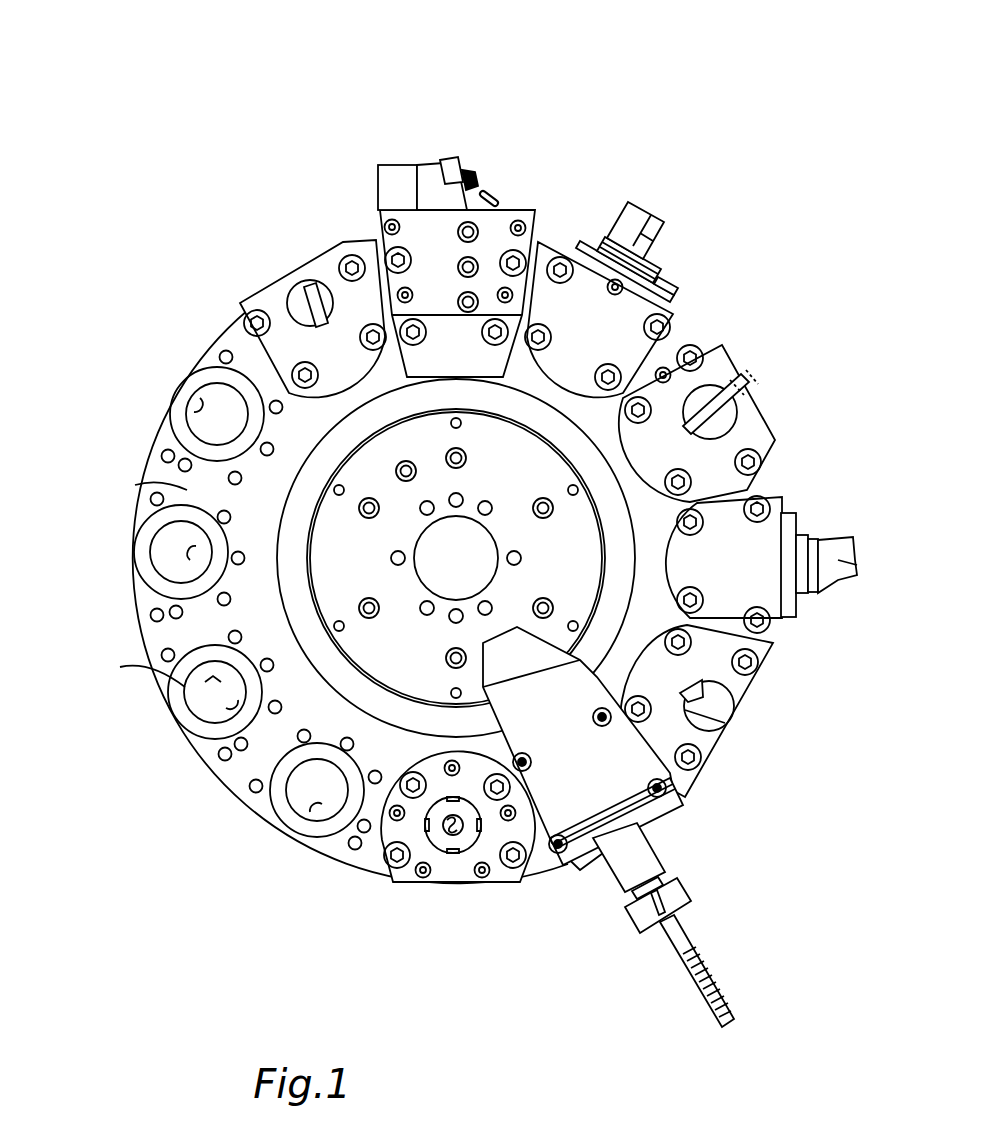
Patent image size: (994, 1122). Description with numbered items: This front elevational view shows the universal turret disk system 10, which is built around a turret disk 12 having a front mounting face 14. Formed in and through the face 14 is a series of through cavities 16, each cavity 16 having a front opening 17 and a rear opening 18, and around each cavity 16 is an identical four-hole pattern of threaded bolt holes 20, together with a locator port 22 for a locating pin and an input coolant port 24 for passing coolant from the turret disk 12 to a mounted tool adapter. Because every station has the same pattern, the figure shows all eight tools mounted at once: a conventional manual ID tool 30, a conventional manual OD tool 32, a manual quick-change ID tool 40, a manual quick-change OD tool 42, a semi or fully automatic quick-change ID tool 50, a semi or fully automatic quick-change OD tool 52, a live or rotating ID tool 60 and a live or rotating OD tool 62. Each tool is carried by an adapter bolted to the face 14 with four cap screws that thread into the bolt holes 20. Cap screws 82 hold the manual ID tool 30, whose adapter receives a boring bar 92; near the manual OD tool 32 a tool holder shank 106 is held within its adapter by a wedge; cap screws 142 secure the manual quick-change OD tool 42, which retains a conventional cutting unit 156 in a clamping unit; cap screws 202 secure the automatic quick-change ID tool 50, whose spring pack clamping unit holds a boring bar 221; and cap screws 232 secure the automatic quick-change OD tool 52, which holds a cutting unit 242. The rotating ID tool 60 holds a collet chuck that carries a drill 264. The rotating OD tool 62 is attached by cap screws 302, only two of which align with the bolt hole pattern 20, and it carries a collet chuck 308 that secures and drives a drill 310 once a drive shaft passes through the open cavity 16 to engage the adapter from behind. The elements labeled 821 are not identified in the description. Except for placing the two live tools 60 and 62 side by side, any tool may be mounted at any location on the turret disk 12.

The universal turret disk system 10 is at (573, 100).
The turret disk 12 is at (142, 460).
The front mounting face 14 is at (145, 482).
The through cavity 16 is at (197, 405).
The front opening 17 is at (198, 400).
The rear opening 18 is at (193, 415).
The threaded bolt hole 20 is at (226, 350).
The locator port 22 is at (228, 690).
The input coolant port 24 is at (162, 645).
The conventional manual ID tool 30 is at (754, 397).
The conventional manual OD tool 32 is at (455, 193).
The manual quick-change ID tool 40 is at (287, 233).
The manual quick-change OD tool 42 is at (652, 258).
The semi or fully automatic quick-change ID tool 50 is at (743, 742).
The semi or fully automatic quick-change OD tool 52 is at (795, 554).
The live or rotating ID tool 60 is at (458, 872).
The live or rotating OD tool 62 is at (664, 827).
The cap screws 82 is at (690, 358).
The boring bar 92 is at (712, 408).
The tool holder shank 106 is at (428, 176).
The cap screws 142 is at (560, 268).
The cutting unit 156 is at (640, 225).
The cap screws 202 is at (747, 663).
The boring bar 221 is at (722, 712).
The cap screws 232 is at (782, 505).
The cutting unit 242 is at (845, 545).
The drill 264 is at (448, 845).
The cap screws 302 is at (658, 790).
The collet chuck 308 is at (640, 926).
The drill 310 is at (722, 1000).
The clamping bolts 821 is at (398, 258).